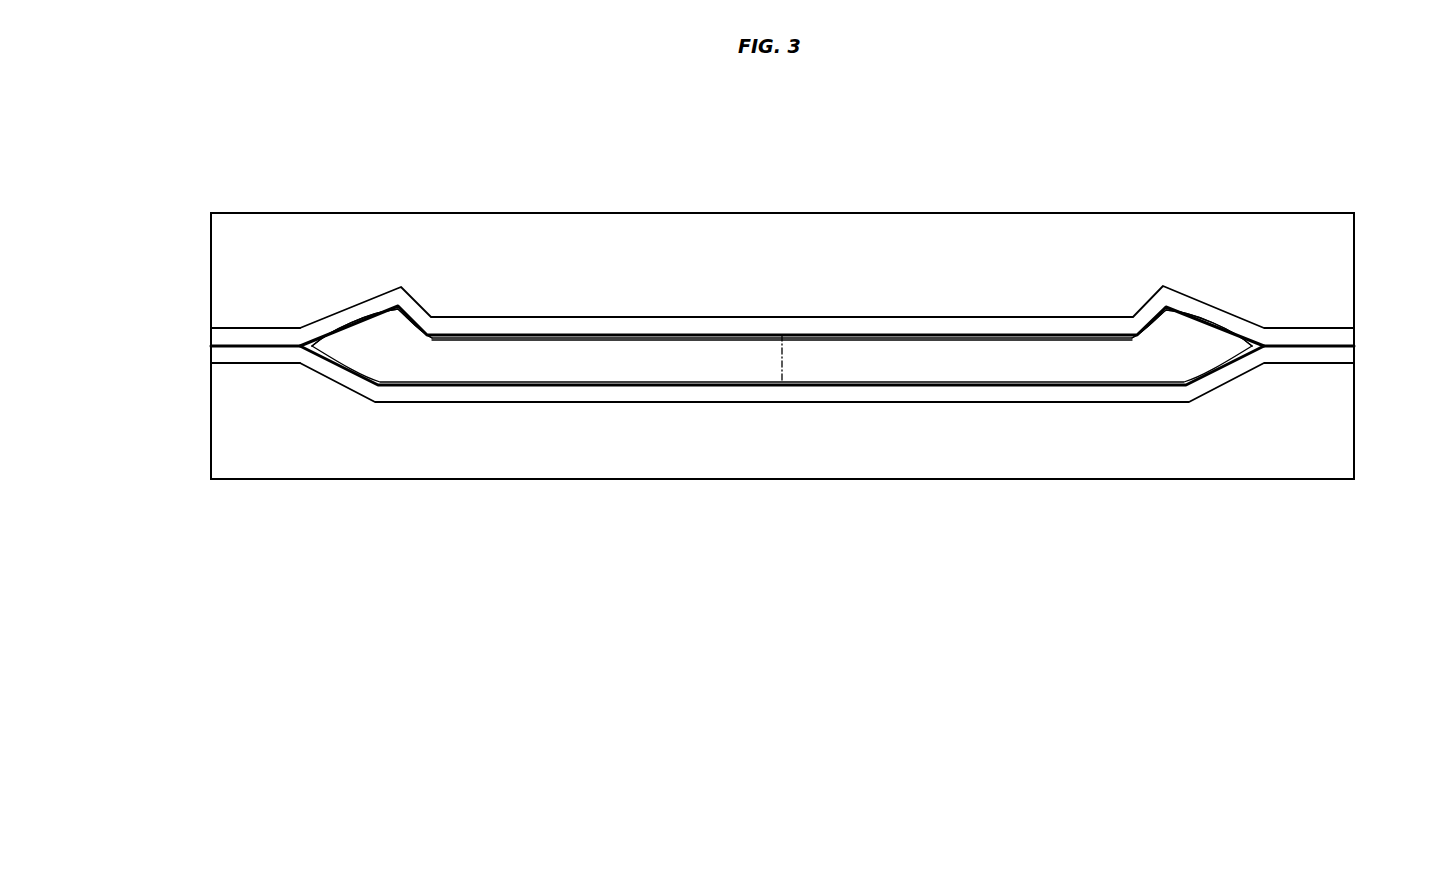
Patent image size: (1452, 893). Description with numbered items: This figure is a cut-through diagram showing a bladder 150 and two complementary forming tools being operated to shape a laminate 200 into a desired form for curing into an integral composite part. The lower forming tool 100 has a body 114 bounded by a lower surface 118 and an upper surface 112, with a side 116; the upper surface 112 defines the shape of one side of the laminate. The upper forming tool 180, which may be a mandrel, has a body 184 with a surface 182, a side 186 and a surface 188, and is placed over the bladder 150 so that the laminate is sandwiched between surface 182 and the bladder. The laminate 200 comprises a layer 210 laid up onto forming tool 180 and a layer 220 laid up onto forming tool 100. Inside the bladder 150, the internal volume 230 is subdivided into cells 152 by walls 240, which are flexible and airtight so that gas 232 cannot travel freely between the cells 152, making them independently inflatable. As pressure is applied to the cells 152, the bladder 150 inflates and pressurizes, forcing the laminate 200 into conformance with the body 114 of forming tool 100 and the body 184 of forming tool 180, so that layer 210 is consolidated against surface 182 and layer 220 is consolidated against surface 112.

The forming tool 100 is at (782, 355).
The upper surface 112 is at (596, 409).
The body 114 is at (1327, 422).
The side 116 is at (178, 346).
The lower surface 118 is at (377, 482).
The bladder 150 is at (1172, 388).
The cells 152 is at (510, 362).
The forming tool 180 is at (448, 196).
The surface 182 is at (659, 314).
The body 184 is at (1255, 232).
The side 186 is at (1356, 265).
The surface 188 is at (892, 210).
The laminate 200 is at (222, 343).
The layer 210 is at (232, 335).
The layer 220 is at (245, 358).
The internal volume 230 is at (993, 353).
The gas 232 is at (940, 354).
The walls 240 is at (783, 360).